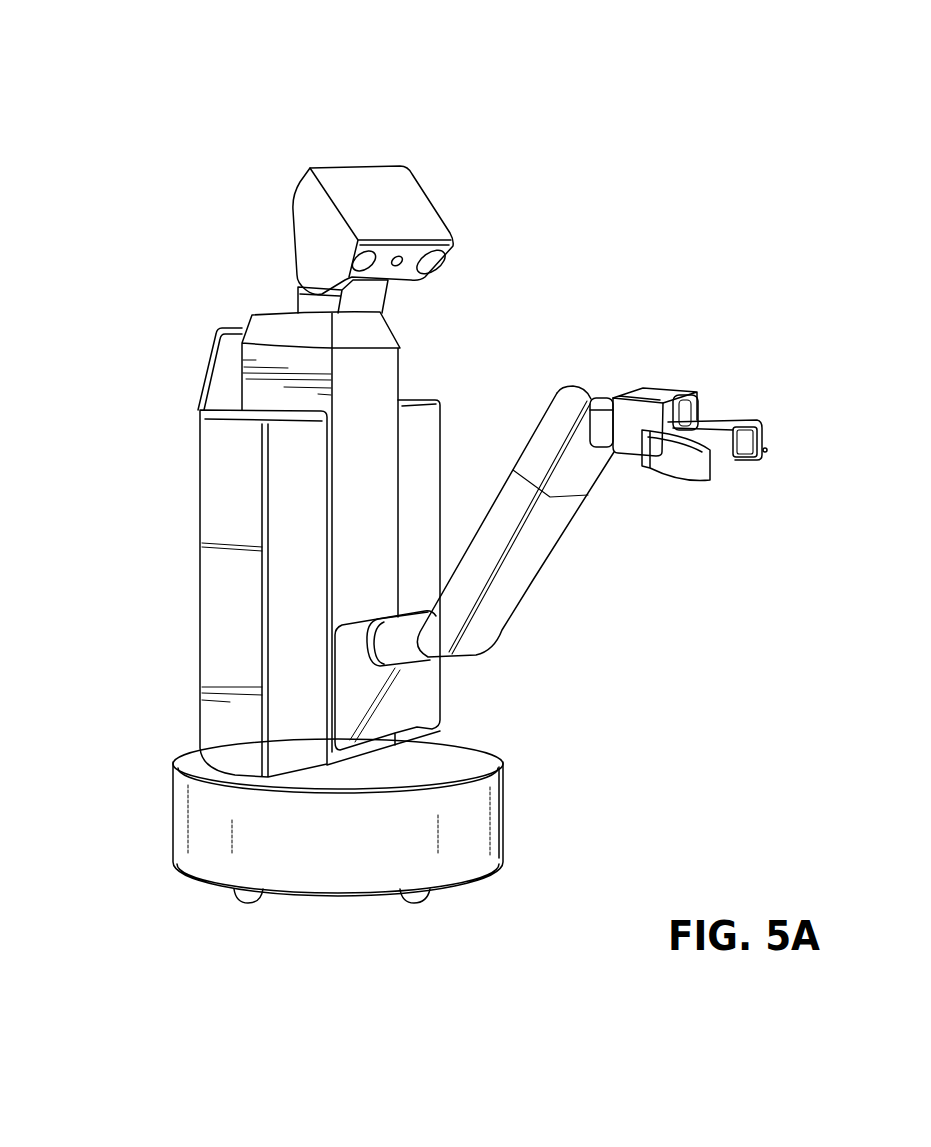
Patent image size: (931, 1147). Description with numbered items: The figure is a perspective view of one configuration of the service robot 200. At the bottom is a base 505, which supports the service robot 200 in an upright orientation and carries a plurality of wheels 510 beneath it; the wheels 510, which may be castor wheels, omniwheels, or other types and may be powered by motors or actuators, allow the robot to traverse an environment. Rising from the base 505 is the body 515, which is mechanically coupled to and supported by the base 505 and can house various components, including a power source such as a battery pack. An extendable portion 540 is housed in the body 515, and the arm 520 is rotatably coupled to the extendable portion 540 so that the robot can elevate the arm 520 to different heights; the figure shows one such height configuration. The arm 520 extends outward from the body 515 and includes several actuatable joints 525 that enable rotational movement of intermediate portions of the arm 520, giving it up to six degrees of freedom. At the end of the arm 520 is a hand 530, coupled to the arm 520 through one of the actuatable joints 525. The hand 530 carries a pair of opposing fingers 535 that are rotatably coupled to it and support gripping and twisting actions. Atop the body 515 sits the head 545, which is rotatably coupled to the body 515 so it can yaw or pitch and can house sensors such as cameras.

The service robot 200 is at (179, 104).
The base 505 is at (180, 807).
The wheels 510 is at (248, 903).
The body 515 is at (223, 597).
The arm 520 is at (668, 489).
The actuatable joints 525 is at (576, 406).
The hand 530 is at (790, 428).
The fingers 535 is at (724, 418).
The extendable portion 540 is at (218, 388).
The head 545 is at (293, 222).